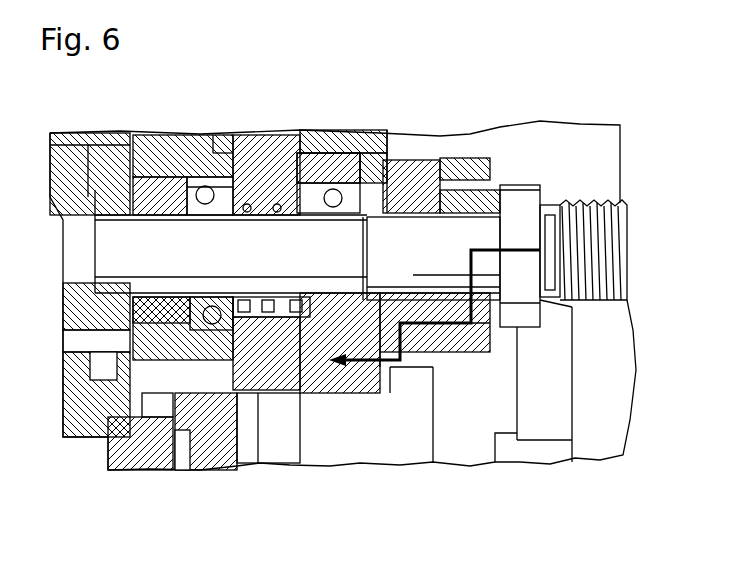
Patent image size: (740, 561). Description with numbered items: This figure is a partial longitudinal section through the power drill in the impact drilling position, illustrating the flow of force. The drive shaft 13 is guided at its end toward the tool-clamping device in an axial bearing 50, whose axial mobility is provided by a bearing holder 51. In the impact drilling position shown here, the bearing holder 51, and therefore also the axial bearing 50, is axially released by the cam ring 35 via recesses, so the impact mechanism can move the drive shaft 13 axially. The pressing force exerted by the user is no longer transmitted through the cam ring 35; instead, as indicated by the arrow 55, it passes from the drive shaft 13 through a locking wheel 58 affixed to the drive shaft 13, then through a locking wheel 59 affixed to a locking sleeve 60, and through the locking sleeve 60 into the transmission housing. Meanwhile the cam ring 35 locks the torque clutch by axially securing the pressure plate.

The drive shaft 13 is at (432, 263).
The cam ring 35 is at (207, 457).
The axial bearing 50 is at (333, 190).
The bearing holder 51 is at (290, 405).
The arrow 55 is at (525, 250).
The locking wheel 58 is at (450, 163).
The locking wheel 59 is at (420, 163).
The locking sleeve 60 is at (378, 170).